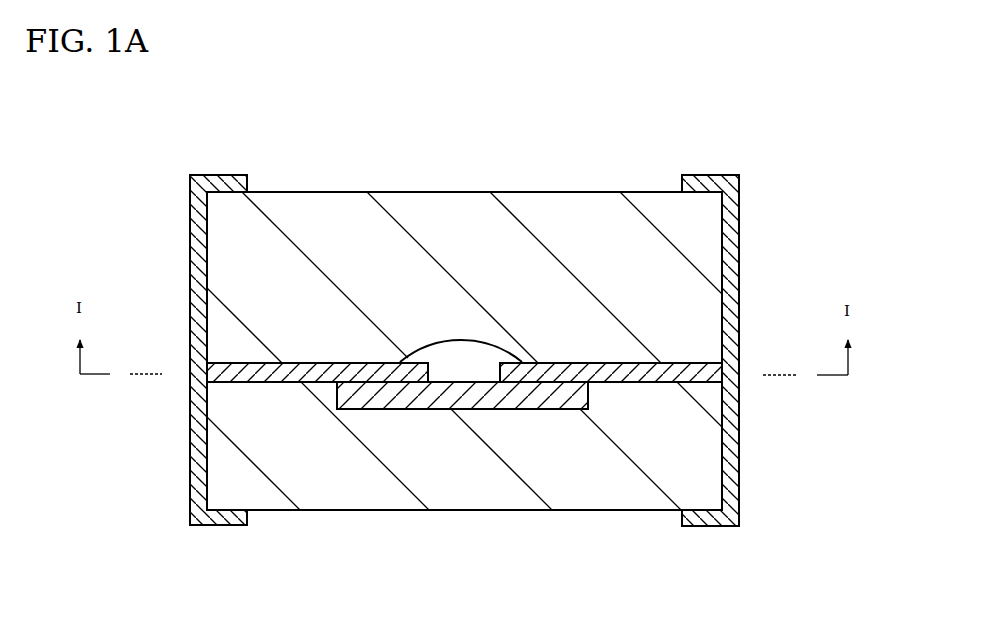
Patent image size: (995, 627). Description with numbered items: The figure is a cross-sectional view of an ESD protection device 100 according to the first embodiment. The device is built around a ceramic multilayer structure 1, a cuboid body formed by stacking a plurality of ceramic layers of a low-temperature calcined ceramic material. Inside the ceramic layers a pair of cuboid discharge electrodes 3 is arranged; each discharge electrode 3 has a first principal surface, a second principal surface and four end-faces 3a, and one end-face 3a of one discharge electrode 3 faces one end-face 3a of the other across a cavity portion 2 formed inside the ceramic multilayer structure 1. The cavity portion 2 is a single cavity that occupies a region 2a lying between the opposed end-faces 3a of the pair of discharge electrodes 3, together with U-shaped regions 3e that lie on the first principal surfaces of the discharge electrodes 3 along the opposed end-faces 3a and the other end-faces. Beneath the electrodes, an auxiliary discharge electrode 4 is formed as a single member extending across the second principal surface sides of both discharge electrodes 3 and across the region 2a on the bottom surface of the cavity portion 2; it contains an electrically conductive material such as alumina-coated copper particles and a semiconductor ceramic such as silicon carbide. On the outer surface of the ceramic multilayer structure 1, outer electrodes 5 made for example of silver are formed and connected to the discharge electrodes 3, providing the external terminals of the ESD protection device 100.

The ESD protection device 100 is at (133, 100).
The ceramic multilayer structure 1 is at (648, 192).
The cavity portion 2 is at (397, 352).
The region between opposed end-faces 2a is at (463, 360).
The discharge electrode 3 is at (303, 382).
The end-face 3a is at (428, 382).
The U-shaped region 3e is at (418, 360).
The auxiliary discharge electrode 4 is at (367, 398).
The outer electrode 5 is at (190, 240).